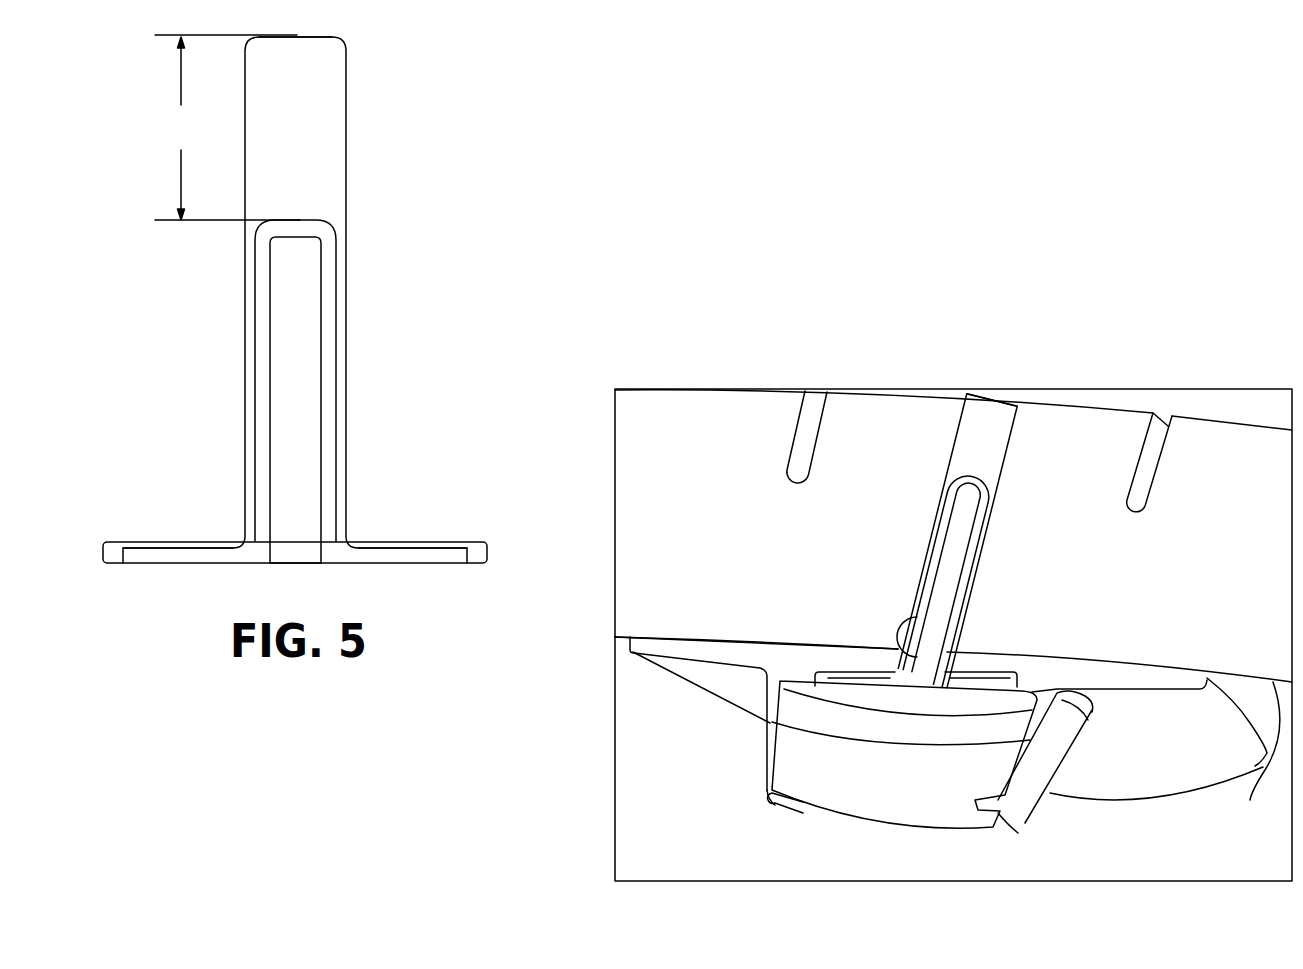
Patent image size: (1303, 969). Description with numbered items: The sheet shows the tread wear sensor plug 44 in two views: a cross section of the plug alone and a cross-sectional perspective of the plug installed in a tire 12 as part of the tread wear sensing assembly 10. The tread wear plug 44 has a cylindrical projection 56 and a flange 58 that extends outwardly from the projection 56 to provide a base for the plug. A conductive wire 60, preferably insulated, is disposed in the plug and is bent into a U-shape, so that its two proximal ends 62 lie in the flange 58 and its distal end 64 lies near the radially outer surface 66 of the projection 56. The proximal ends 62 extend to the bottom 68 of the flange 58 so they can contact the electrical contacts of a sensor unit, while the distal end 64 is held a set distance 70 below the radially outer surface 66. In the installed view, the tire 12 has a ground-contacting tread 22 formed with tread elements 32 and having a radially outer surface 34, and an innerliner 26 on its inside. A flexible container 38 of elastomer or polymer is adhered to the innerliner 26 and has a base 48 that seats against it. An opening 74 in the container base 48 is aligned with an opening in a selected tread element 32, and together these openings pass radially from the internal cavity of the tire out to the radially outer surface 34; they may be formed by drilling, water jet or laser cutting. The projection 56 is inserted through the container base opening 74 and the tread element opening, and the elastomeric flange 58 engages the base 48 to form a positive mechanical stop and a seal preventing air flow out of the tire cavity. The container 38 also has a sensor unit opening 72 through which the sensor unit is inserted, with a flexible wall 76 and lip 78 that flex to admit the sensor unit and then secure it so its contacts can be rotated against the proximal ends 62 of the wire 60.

In FIG. 6, the assembly 10 is at (792, 335).
In FIG. 6, the tire 12 is at (959, 474).
In FIG. 6, the tread 22 is at (838, 392).
In FIG. 6, the innerliner 26 is at (1250, 800).
In FIG. 6, the tread element 32 is at (915, 410).
In FIG. 6, the radially outer surface 34 is at (1100, 412).
In FIG. 6, the container 38 is at (765, 688).
In FIG. 5, the tread wear sensor plug 44 is at (317, 318).
In FIG. 6, the tread wear sensor plug 44 is at (828, 587).
In FIG. 6, the base 48 is at (675, 652).
In FIG. 5, the cylindrical projection 56 is at (328, 88).
In FIG. 6, the cylindrical projection 56 is at (957, 541).
In FIG. 5, the flange 58 is at (470, 555).
In FIG. 6, the flange 58 is at (878, 808).
In FIG. 5, the conductive wire 60 is at (333, 265).
In FIG. 6, the conductive wire 60 is at (946, 583).
In FIG. 5, the proximal ends 62 is at (140, 549).
In FIG. 6, the proximal ends 62 is at (883, 686).
In FIG. 5, the distal end 64 is at (293, 228).
In FIG. 6, the distal end 64 is at (947, 579).
In FIG. 5, the radially outer surface 66 is at (298, 35).
In FIG. 6, the radially outer surface 66 is at (992, 400).
In FIG. 5, the bottom 68 is at (290, 563).
In FIG. 5, the set distance 70 is at (227, 127).
In FIG. 6, the sensor unit opening 72 is at (802, 810).
In FIG. 6, the opening 74 is at (912, 622).
In FIG. 6, the wall 76 is at (770, 723).
In FIG. 6, the lip 78 is at (772, 797).